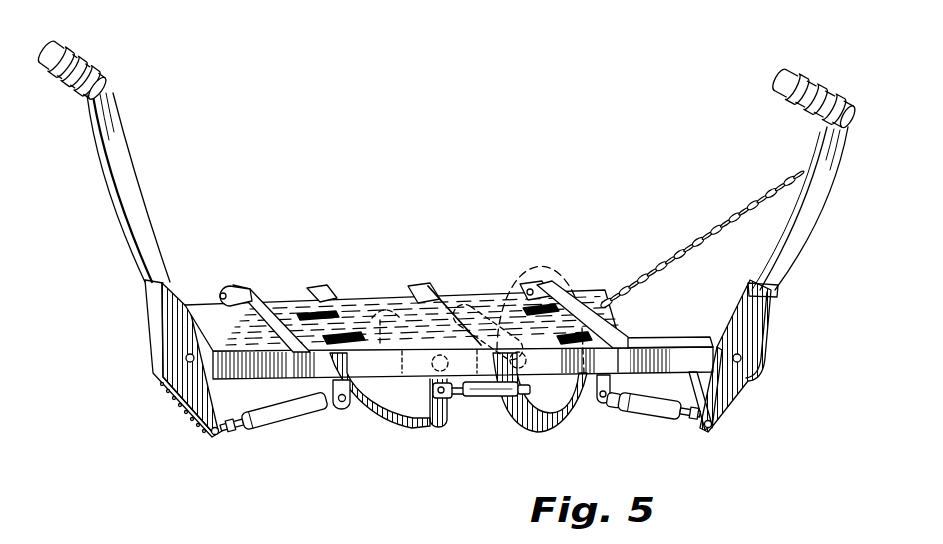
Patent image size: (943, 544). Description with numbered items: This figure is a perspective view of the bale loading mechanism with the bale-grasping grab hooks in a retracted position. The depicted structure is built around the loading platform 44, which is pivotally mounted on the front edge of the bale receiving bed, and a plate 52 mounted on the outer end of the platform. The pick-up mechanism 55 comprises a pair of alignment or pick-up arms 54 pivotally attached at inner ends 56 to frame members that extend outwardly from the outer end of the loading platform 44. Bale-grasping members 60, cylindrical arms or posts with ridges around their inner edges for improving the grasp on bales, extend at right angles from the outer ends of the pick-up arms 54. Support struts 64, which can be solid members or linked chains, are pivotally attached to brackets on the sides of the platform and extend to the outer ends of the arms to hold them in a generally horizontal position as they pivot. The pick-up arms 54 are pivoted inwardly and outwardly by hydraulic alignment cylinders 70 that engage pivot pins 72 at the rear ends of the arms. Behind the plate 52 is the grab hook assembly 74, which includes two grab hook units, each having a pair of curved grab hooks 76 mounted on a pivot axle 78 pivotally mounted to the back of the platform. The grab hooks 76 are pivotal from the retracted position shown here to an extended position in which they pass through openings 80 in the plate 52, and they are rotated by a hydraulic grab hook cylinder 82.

The loading platform 44 is at (287, 286).
The plate 52 is at (437, 311).
The pick-up arms 54 is at (124, 148).
The pick-up mechanism 55 is at (192, 171).
The inner ends 56 is at (752, 373).
The bale-grasping members 60 is at (88, 60).
The support struts 64 is at (693, 247).
The hydraulic alignment cylinders 70 is at (294, 418).
The pivot pins 72 is at (217, 440).
The grab hook assembly 74 is at (478, 442).
The grab hooks 76 is at (414, 407).
The pivot axle 78 is at (540, 269).
The openings 80 is at (334, 313).
The hydraulic grab hook cylinder 82 is at (473, 394).